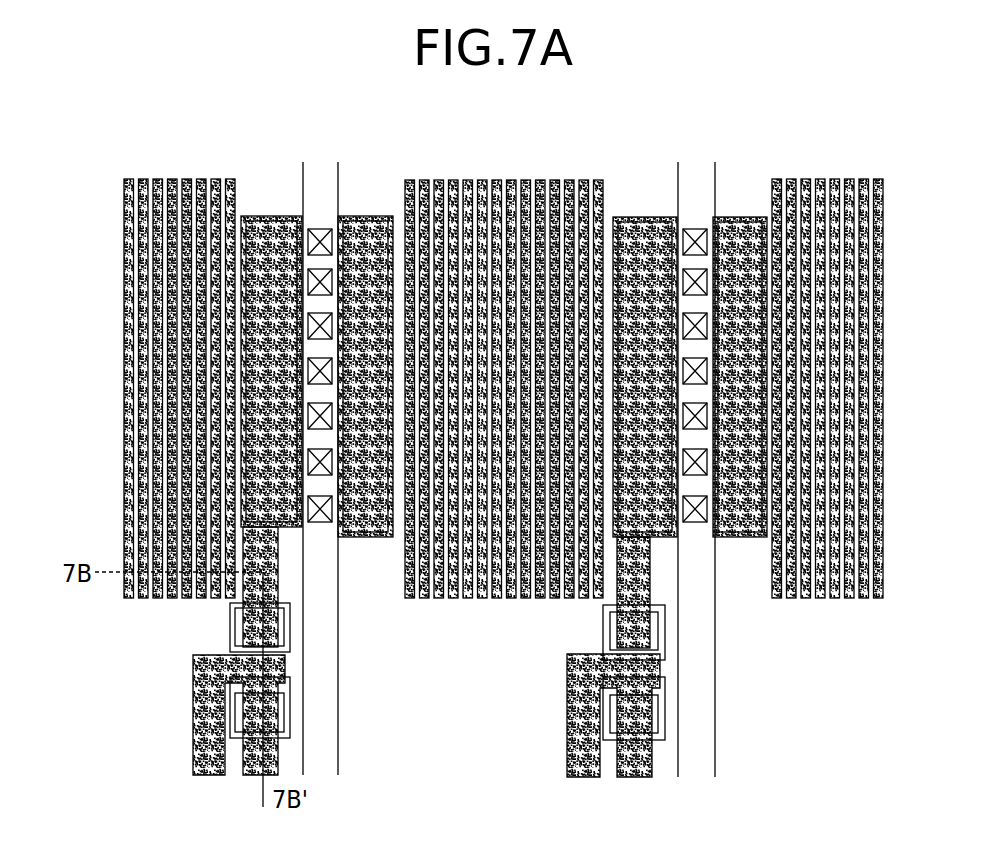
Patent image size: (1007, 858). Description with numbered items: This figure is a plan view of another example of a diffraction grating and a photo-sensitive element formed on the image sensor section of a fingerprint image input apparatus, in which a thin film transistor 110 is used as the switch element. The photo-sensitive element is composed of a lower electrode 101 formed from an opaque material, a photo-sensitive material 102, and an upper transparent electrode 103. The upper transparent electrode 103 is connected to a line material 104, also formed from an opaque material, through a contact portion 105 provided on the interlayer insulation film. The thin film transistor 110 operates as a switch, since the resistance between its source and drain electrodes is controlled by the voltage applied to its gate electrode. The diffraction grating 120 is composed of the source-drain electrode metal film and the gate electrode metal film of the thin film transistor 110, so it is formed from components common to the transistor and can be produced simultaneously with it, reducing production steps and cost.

The lower electrode 101 is at (230, 628).
The photo-sensitive material 102 is at (362, 540).
The upper transparent electrode 103 is at (268, 216).
The line material 104 is at (330, 686).
The contact portion 105 is at (333, 243).
The thin film transistor 110 is at (175, 703).
The diffraction grating 120 is at (113, 491).